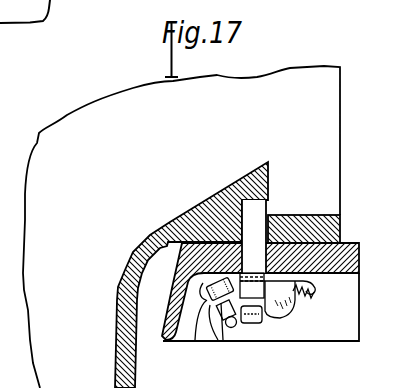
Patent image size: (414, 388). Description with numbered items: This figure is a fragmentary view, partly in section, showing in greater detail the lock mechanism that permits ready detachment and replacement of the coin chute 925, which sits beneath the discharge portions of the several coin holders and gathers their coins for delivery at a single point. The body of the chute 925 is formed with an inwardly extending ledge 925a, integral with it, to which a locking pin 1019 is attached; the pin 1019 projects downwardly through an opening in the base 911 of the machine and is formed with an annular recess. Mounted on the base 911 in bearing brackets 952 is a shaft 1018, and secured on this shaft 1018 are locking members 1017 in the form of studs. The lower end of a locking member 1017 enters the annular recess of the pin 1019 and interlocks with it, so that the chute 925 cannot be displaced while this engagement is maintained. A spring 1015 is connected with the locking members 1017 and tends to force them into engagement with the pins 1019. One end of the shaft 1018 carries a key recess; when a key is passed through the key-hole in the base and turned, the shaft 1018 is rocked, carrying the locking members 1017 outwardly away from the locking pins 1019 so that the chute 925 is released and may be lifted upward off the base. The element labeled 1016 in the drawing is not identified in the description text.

The coin chute 925 is at (58, 366).
The inwardly extending ledge 925a is at (206, 212).
The locking pin 1019 is at (264, 211).
The shaft 1018 is at (218, 360).
The locking member 1017 is at (194, 344).
The block 1016 is at (232, 338).
The base 911 is at (277, 336).
The bearing bracket 952 is at (286, 317).
The spring 1015 is at (301, 300).